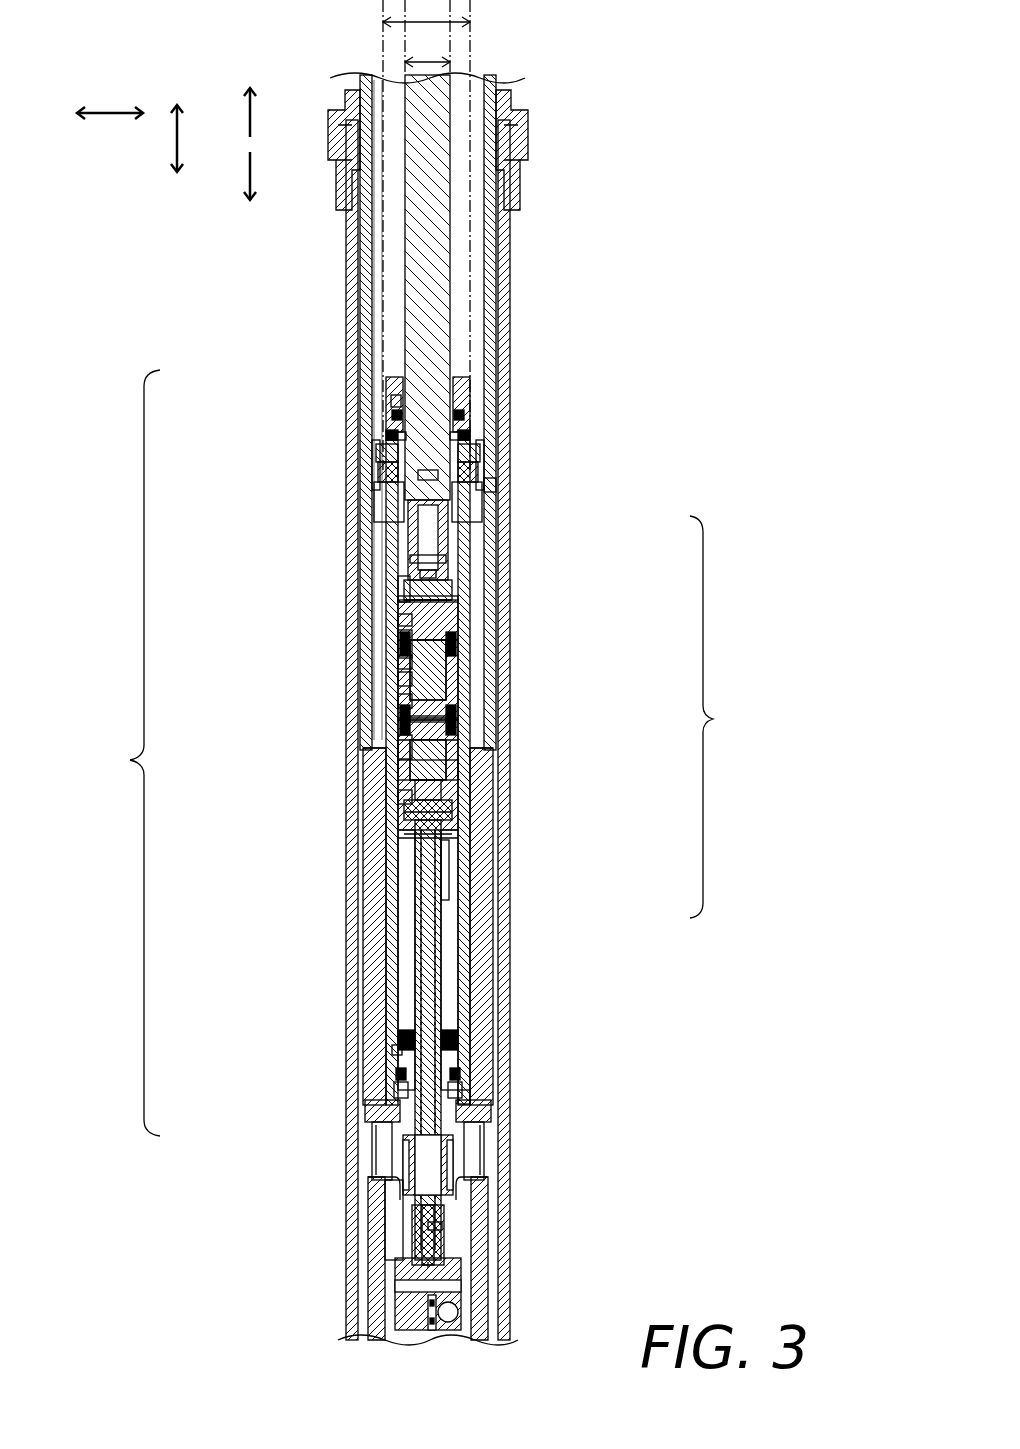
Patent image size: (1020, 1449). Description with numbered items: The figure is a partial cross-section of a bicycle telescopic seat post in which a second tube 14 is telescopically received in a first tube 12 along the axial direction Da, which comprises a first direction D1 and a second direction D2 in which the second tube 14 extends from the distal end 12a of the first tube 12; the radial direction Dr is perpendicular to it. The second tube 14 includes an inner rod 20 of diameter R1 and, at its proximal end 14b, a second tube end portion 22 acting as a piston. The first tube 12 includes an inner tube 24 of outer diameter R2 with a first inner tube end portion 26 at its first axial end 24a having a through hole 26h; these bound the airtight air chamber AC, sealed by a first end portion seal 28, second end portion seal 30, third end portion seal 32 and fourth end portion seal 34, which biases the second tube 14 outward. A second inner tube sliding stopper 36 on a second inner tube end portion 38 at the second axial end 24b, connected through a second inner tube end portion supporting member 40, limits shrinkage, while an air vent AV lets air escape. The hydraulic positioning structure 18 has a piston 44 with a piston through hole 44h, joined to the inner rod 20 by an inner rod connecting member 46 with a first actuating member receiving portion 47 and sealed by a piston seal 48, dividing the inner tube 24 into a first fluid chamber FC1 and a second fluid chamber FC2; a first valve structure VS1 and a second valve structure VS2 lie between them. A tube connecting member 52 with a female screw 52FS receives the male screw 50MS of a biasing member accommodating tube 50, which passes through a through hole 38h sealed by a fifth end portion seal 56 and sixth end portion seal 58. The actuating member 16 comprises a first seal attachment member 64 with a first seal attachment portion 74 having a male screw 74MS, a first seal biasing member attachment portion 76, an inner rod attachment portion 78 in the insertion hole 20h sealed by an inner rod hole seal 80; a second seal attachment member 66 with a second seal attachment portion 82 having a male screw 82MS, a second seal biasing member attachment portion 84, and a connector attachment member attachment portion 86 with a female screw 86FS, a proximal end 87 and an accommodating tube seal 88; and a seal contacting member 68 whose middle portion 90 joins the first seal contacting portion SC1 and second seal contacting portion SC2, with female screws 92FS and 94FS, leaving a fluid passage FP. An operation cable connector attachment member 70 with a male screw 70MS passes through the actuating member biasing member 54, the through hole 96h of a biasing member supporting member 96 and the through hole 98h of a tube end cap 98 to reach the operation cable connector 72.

The first tube 12 is at (508, 230).
The distal end 12a is at (515, 175).
The second tube 14 is at (492, 300).
The proximal end 14b is at (495, 485).
The air chamber AC is at (388, 272).
The actuating member 16 is at (717, 717).
The hydraulic positioning structure 18 is at (127, 753).
The inner rod 20 is at (440, 347).
The insertion hole 20h is at (452, 470).
The second tube end portion 22 is at (490, 505).
The inner tube 24 is at (494, 1010).
The first axial end 24a is at (468, 440).
The second axial end 24b is at (472, 1095).
The first inner tube end portion 26 is at (464, 455).
The through hole 26h is at (393, 410).
The first end portion seal 28 is at (472, 495).
The second end portion seal 30 is at (472, 510).
The third end portion seal 32 is at (390, 472).
The fourth end portion seal 34 is at (394, 440).
The second inner tube sliding stopper 36 is at (482, 1060).
The second inner tube end portion 38 is at (385, 1130).
The through hole 38h is at (395, 1050).
The second inner tube end portion supporting member 40 is at (375, 1250).
The piston 44 is at (405, 660).
The piston through hole 44h is at (405, 680).
The inner rod connecting member 46 is at (408, 600).
The first actuating member receiving portion 47 is at (405, 620).
The piston seal 48 is at (405, 700).
The biasing member accommodating tube 50 is at (376, 960).
The male screw 50MS is at (388, 870).
The tube connecting member 52 is at (410, 770).
The female screw 52FS is at (400, 840).
The actuating member biasing member 54 is at (462, 1040).
The fifth end portion seal 56 is at (400, 1090).
The sixth end portion seal 58 is at (400, 1075).
The first seal attachment member 64 is at (622, 518).
The second seal attachment member 66 is at (643, 717).
The seal contacting member 68 is at (643, 600).
The operation cable connector attachment member 70 is at (442, 900).
The male screw 70MS is at (442, 835).
The operation cable connector 72 is at (437, 940).
The first seal attachment portion 74 is at (447, 590).
The male screw 74MS is at (449, 610).
The first seal biasing member attachment portion 76 is at (442, 575).
The inner rod attachment portion 78 is at (447, 560).
The inner rod hole seal 80 is at (405, 585).
The second seal attachment portion 82 is at (460, 760).
The male screw 82MS is at (452, 740).
The second seal biasing member attachment portion 84 is at (447, 780).
The connector attachment member attachment portion 86 is at (457, 800).
The female screw 86FS is at (442, 810).
The proximal end 87 is at (452, 870).
The accommodating tube seal 88 is at (405, 795).
The middle portion 90 is at (458, 670).
The female screw 92FS is at (457, 640).
The female screw 94FS is at (457, 715).
The biasing member supporting member 96 is at (452, 1160).
The through hole 96h is at (457, 1140).
The tube end cap 98 is at (442, 1195).
The through hole 98h is at (432, 1222).
The first seal contacting portion SC1 is at (454, 655).
The second seal contacting portion SC2 is at (454, 690).
The first valve structure VS1 is at (405, 640).
The second valve structure VS2 is at (405, 745).
The fluid passage FP is at (410, 720).
The first fluid chamber FC1 is at (400, 515).
The second fluid chamber FC2 is at (395, 900).
The air vent AV is at (380, 1190).
The radial direction Dr is at (110, 112).
The axial direction Da is at (177, 138).
The first direction D1 is at (250, 173).
The second direction D2 is at (250, 118).
The diameter R1 is at (427, 37).
The outer diameter R2 is at (426, 235).